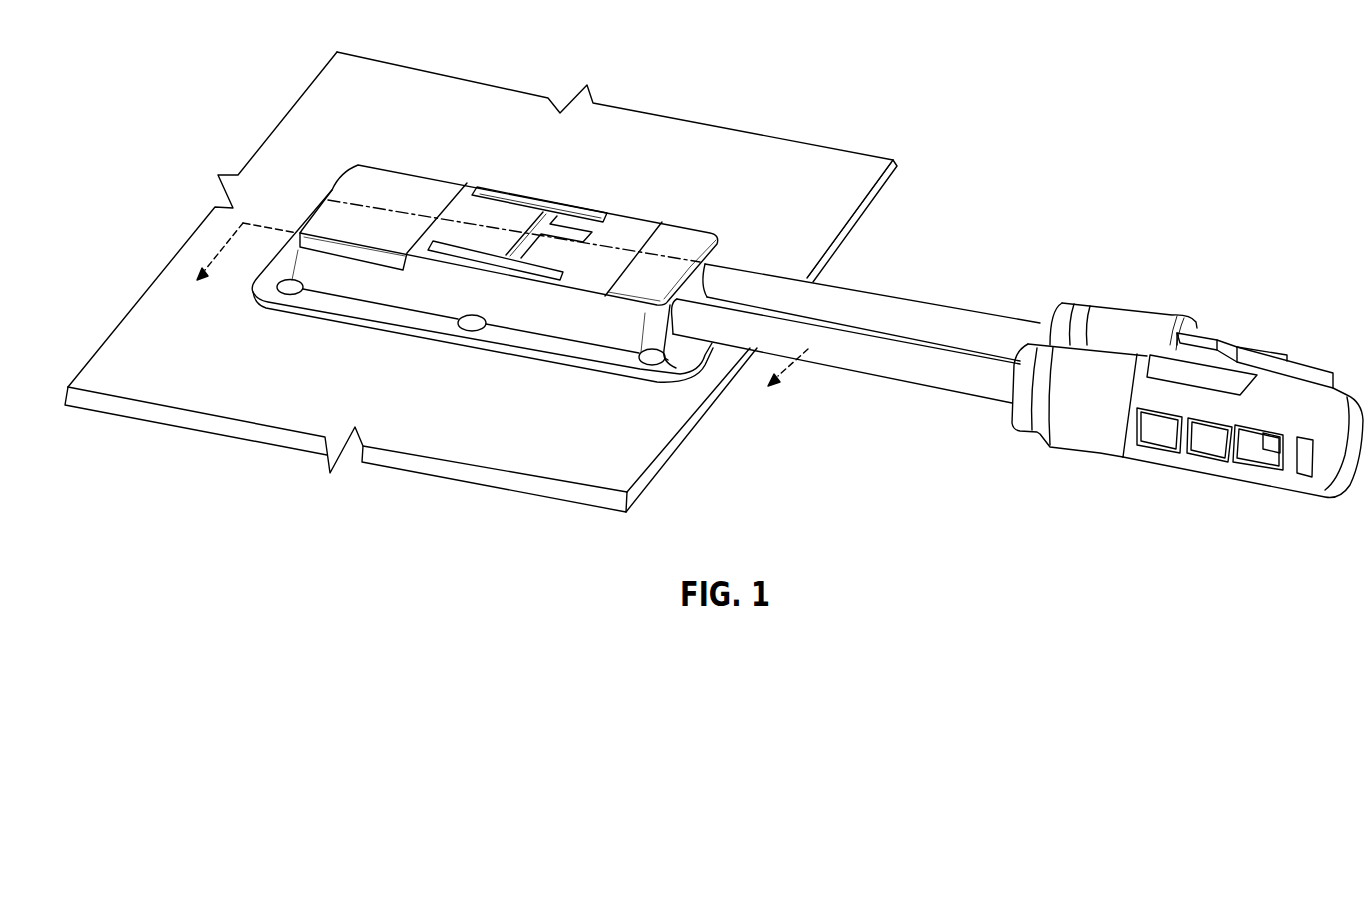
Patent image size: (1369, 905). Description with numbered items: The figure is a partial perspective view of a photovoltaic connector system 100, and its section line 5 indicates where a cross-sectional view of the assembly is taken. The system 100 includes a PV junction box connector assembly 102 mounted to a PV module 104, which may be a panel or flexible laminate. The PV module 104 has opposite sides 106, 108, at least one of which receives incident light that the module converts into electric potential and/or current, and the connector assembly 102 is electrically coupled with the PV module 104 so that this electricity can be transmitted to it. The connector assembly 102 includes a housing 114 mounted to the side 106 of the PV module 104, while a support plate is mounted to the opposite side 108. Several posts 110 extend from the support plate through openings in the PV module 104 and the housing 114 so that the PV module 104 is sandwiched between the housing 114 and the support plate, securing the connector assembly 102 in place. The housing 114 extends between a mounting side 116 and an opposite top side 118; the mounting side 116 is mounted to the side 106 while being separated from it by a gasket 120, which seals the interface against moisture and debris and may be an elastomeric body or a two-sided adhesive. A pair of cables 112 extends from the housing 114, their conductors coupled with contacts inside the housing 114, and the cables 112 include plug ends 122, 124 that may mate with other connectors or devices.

The system 100 is at (1042, 117).
The PV junction box connector assembly 102 is at (620, 233).
The PV module 104 is at (883, 190).
The side 106 is at (834, 173).
The opposite side 108 is at (847, 240).
The posts 110 is at (650, 365).
The cables 112 is at (995, 313).
The housing 114 is at (428, 293).
The mounting side 116 is at (323, 323).
The top side 118 is at (483, 216).
The gasket 120 is at (382, 330).
The plug end 122 is at (1183, 312).
The plug end 124 is at (1193, 477).
The section line 5- 5 is at (493, 312).